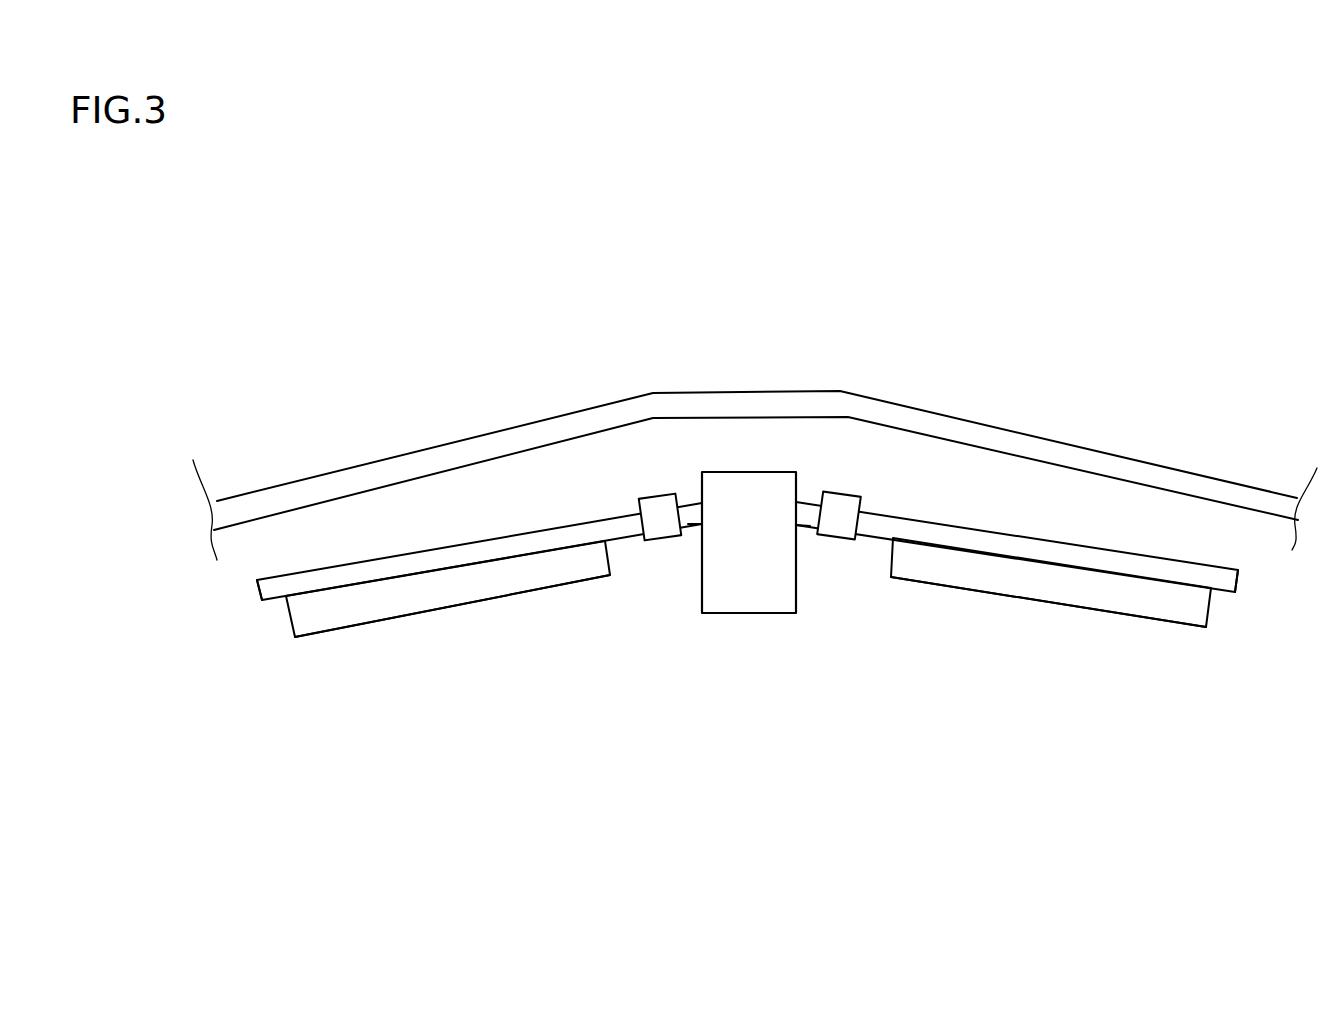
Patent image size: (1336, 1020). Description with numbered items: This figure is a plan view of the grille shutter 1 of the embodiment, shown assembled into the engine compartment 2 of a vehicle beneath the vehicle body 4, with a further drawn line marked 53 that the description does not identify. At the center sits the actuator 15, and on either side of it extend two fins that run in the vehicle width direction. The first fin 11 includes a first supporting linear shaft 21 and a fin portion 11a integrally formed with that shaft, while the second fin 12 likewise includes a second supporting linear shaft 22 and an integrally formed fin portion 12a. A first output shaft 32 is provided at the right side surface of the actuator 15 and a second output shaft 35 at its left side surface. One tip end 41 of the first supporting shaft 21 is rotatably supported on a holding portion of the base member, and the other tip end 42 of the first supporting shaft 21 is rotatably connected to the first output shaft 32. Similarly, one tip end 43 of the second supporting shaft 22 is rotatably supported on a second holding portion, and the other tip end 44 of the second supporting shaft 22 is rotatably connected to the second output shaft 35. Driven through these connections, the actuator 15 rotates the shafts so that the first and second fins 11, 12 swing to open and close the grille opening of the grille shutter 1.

The grille shutter 1 is at (785, 725).
The engine compartment 2 is at (750, 754).
The vehicle body 4 is at (325, 492).
The roof sheathing 53 is at (470, 495).
The first fin 11 is at (470, 623).
The fin portion 11a is at (388, 600).
The second fin 12 is at (1090, 623).
The fin portion 12a is at (1167, 602).
The actuator 15 is at (740, 498).
The first supporting linear shaft 21 is at (560, 533).
The second supporting linear shaft 22 is at (945, 532).
The first output shaft 32 is at (688, 530).
The second output shaft 35 is at (808, 528).
The one tip end 41 is at (276, 585).
The other tip end 42 is at (660, 510).
The one tip end 43 is at (1217, 578).
The other tip end 44 is at (840, 507).